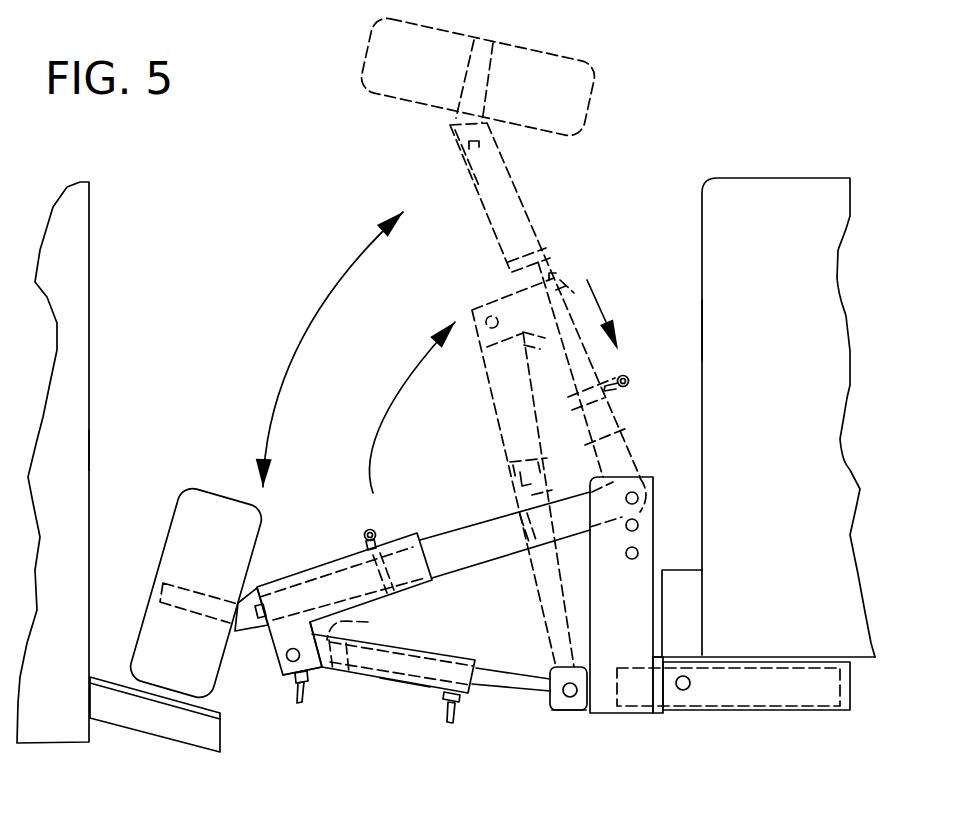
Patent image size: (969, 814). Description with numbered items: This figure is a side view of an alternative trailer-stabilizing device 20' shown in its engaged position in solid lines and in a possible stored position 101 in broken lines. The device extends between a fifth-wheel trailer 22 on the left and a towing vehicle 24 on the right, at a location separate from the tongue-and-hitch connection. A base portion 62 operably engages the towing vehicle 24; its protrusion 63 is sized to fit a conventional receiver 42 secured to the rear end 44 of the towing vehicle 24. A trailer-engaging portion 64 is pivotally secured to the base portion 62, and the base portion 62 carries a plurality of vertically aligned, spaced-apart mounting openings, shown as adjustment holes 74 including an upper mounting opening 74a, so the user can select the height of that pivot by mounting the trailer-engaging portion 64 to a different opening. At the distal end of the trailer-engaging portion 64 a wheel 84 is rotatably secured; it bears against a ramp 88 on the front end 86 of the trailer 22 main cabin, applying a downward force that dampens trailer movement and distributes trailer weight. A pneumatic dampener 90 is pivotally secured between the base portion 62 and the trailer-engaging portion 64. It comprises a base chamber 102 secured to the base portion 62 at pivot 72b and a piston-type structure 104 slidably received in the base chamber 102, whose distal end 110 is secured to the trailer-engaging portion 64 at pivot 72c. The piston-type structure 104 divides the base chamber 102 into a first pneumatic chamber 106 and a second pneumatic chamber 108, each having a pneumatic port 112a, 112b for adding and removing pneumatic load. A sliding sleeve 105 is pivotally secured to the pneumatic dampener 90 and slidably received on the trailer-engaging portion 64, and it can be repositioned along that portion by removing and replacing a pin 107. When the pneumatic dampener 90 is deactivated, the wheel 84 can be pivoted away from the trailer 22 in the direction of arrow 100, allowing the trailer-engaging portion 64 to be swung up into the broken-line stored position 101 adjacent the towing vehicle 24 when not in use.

The trailer-stabilizing device 20' is at (431, 241).
The fifth-wheel trailer 22 is at (75, 301).
The towing vehicle 24 is at (782, 218).
The receiver 42 is at (808, 712).
The rear end 44 is at (702, 325).
The base portion 62 is at (607, 698).
The protrusion 63 is at (760, 712).
The trailer-engaging portion 64 is at (480, 522).
The pivot 72b is at (287, 657).
The pivot 72c is at (573, 702).
The adjustment holes 74 is at (638, 553).
The upper adjustment hole 74a is at (638, 500).
The wheel 84 is at (203, 513).
The front end 86 is at (90, 453).
The ramp 88 is at (159, 720).
The pneumatic dampener 90 is at (406, 714).
The arrow 100 is at (393, 392).
The stored position 101 is at (437, 157).
The base chamber 102 is at (320, 679).
The piston-type structure 104 is at (518, 678).
The sliding sleeve 105 is at (317, 562).
The first pneumatic chamber 106 is at (374, 623).
The pin 107 is at (364, 532).
The second pneumatic chamber 108 is at (432, 652).
The distal end 110 is at (553, 718).
The pneumatic port 112a is at (457, 707).
The pneumatic port 112b is at (295, 690).